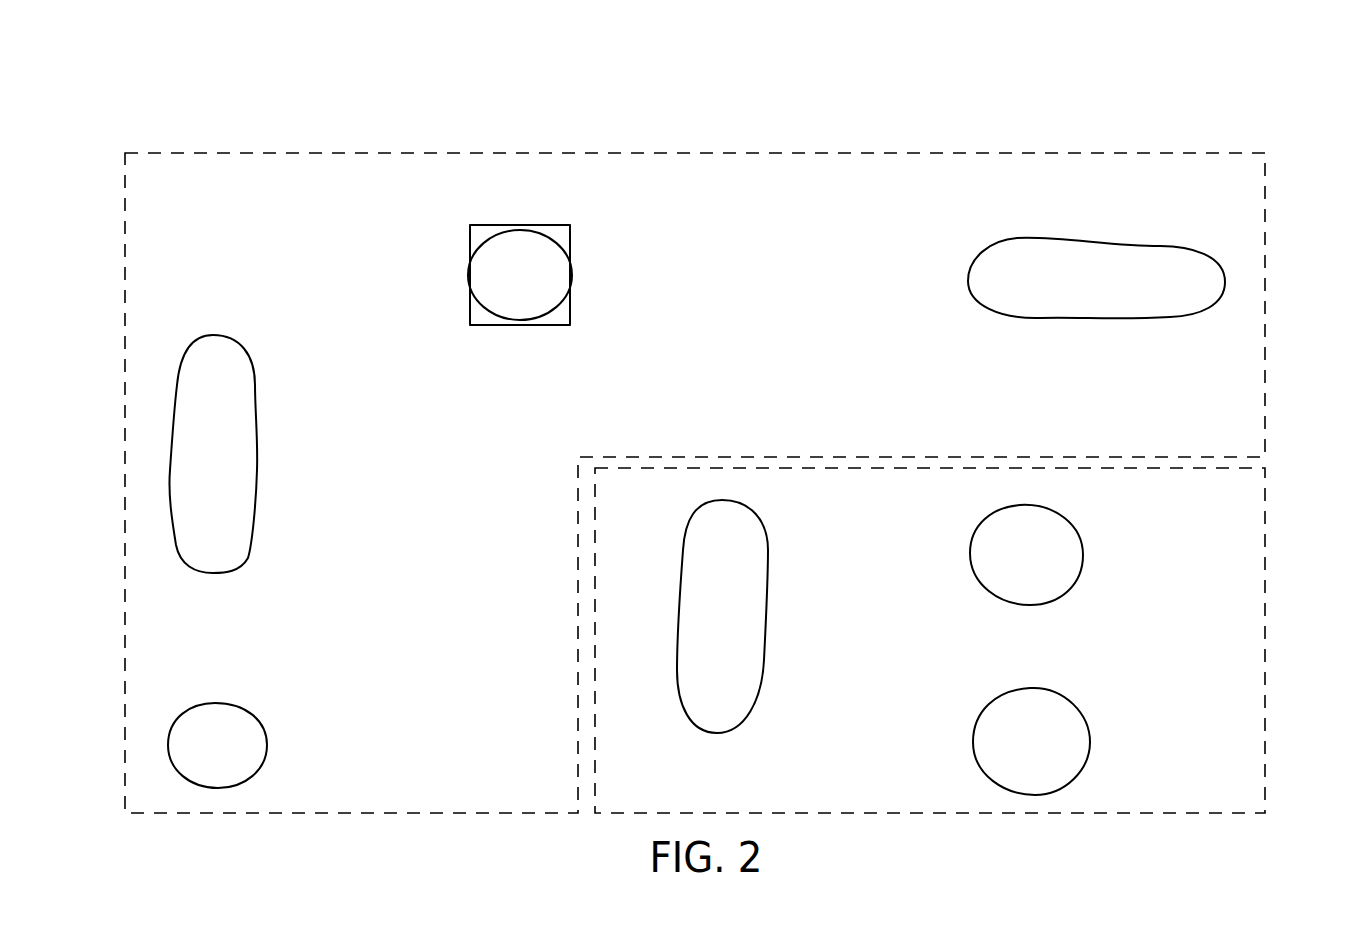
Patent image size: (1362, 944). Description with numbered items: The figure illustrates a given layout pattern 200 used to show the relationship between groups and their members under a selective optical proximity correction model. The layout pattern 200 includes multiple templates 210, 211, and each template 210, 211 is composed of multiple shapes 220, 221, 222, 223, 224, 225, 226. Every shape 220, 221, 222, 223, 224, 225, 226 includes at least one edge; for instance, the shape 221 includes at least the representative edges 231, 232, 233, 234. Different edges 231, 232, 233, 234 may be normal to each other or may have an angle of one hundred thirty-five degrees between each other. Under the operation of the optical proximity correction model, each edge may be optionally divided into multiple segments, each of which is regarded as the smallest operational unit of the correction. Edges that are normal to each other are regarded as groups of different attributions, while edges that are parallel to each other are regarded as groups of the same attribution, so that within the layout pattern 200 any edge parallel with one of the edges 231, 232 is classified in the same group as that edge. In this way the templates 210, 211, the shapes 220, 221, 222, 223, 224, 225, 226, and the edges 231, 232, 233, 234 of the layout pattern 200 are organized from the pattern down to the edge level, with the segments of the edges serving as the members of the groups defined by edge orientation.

The layout pattern 200 is at (1257, 117).
The template 210 is at (1265, 228).
The template 211 is at (1265, 565).
The shape 220 is at (1122, 290).
The shape 221 is at (539, 285).
The shape 222 is at (238, 470).
The shape 223 is at (238, 755).
The shape 224 is at (745, 621).
The shape 225 is at (1048, 565).
The shape 226 is at (1048, 750).
The edge 231 is at (492, 325).
The edge 232 is at (570, 305).
The edge 233 is at (503, 223).
The edge 234 is at (468, 242).